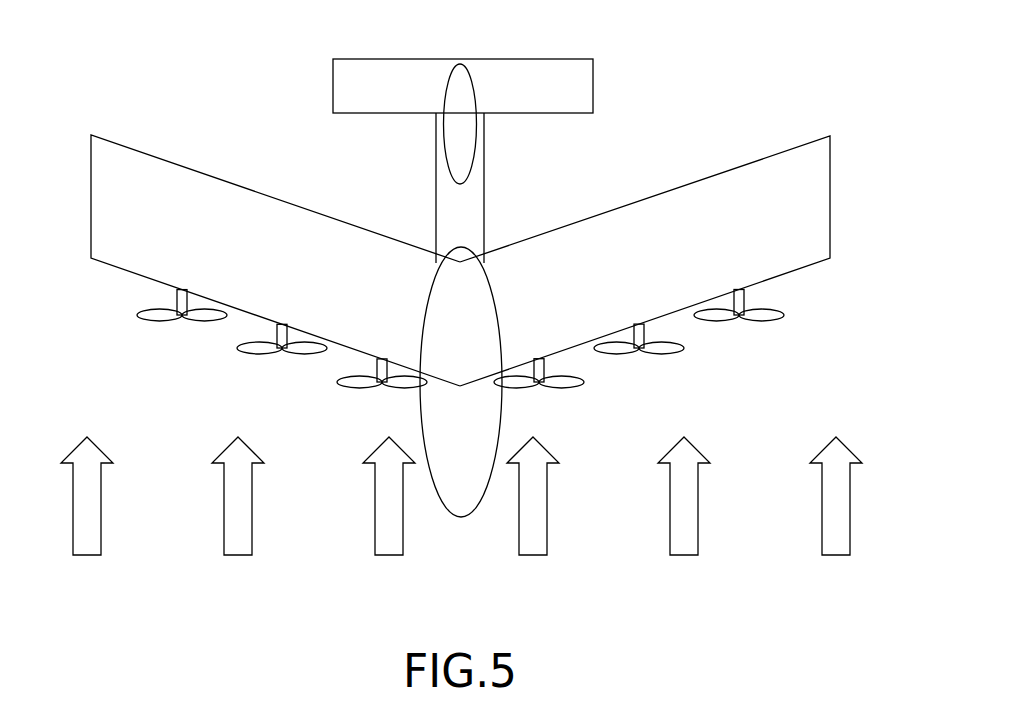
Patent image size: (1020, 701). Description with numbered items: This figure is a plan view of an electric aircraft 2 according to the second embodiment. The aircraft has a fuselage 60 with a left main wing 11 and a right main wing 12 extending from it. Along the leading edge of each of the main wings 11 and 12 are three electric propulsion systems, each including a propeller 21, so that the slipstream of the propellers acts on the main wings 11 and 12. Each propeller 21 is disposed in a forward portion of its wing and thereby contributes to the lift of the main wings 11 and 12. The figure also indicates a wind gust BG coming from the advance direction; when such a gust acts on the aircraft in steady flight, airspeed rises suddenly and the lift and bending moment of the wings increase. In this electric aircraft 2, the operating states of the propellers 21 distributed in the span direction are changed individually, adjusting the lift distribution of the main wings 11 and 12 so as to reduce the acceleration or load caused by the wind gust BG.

The electric aircraft 2 is at (460, 258).
The left main wing 11 is at (212, 188).
The right main wing 12 is at (707, 190).
The propeller 21 is at (158, 320).
The fuselage 60 is at (427, 415).
The wind gust BG is at (379, 555).